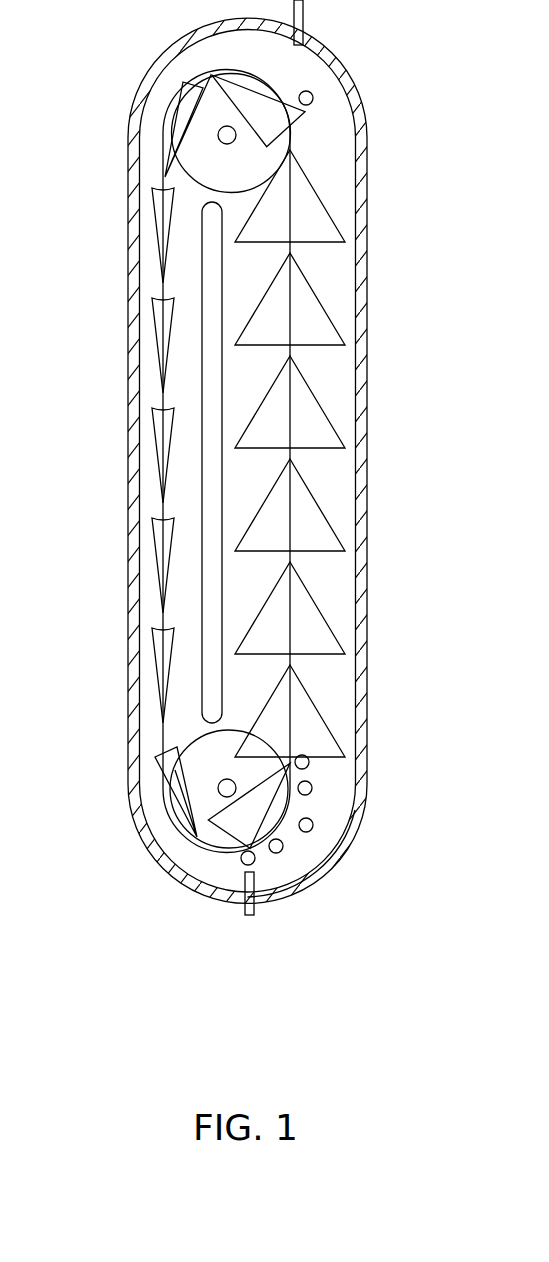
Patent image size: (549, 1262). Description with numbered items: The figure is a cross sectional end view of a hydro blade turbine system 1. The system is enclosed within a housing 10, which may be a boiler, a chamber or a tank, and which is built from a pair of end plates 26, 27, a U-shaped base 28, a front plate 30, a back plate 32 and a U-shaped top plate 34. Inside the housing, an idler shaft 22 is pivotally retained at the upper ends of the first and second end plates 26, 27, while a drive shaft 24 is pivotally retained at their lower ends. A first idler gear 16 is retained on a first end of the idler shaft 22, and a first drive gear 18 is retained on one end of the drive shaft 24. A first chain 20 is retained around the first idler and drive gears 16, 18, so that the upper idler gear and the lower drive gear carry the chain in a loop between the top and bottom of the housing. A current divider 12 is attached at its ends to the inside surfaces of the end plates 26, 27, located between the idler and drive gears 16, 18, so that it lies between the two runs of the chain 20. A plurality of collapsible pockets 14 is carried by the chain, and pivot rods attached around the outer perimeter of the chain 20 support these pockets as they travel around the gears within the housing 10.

The hydro blade turbine system 1 is at (338, 893).
The housing 10 is at (375, 383).
The current divider 12 is at (207, 623).
The collapsible pockets 14 is at (333, 272).
The first idler gear 16 is at (268, 158).
The first drive gear 18 is at (268, 762).
The first chain 20 is at (297, 505).
The idler shaft 22 is at (217, 135).
The drive shaft 24 is at (218, 792).
The first end plate 26 is at (327, 120).
The second end plate 27 is at (343, 798).
The U-shaped base 28 is at (350, 845).
The front plate 30 is at (365, 595).
The back plate 32 is at (128, 582).
The U-shaped top plate 34 is at (333, 92).